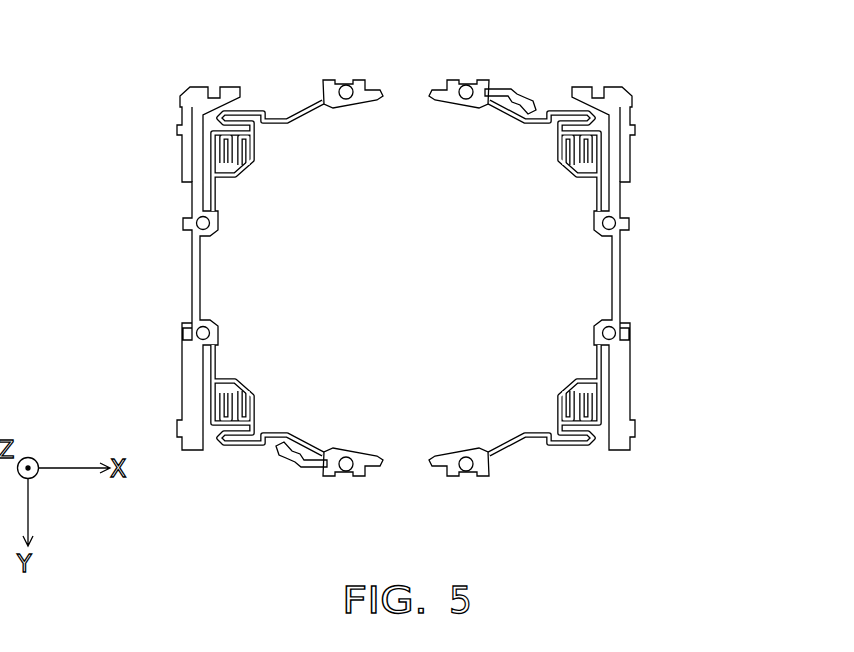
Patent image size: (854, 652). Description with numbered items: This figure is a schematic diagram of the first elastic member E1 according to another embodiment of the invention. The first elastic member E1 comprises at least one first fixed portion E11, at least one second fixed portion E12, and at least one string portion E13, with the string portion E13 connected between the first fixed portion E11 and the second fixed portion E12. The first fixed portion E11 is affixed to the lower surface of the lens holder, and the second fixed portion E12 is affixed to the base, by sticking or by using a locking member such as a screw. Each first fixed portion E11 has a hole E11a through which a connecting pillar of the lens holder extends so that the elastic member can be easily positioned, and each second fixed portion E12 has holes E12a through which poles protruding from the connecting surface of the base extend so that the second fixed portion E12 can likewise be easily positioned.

The first elastic member E1 is at (100, 38).
The first fixed portion E11 is at (450, 88).
The hole E11a is at (345, 92).
The second fixed portion E12 is at (197, 162).
The holes E12a is at (187, 228).
The string portion E13 is at (292, 119).